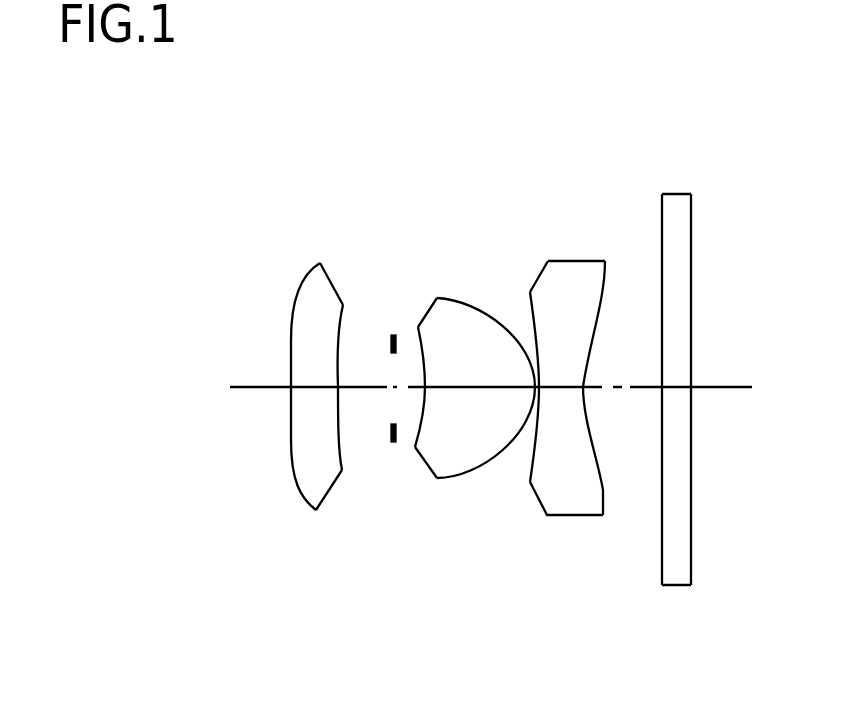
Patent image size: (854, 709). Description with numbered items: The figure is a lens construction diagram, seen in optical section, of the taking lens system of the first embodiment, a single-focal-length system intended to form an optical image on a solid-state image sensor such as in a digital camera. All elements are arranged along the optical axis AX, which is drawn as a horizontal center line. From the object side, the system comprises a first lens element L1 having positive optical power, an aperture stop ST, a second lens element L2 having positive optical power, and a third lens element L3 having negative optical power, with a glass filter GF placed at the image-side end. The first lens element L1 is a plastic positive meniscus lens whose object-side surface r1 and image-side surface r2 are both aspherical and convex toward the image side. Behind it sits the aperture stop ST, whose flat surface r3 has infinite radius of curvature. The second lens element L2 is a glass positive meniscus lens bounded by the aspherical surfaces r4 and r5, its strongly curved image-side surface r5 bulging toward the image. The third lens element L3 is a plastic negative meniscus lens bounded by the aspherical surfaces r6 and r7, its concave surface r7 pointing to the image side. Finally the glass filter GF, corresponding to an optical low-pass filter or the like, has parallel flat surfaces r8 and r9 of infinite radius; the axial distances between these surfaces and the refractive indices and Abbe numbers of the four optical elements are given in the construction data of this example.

The optical axis AX is at (713, 389).
The first lens element L1 is at (305, 415).
The second lens element L2 is at (469, 387).
The third lens element L3 is at (558, 388).
The aperture stop ST is at (384, 335).
The third surface (aperture stop surface) r3 is at (392, 334).
The glass filter GF is at (662, 371).
The first surface r1 is at (291, 336).
The second surface r2 is at (339, 350).
The fourth surface r4 is at (428, 352).
The fifth surface r5 is at (497, 320).
The sixth surface r6 is at (550, 317).
The seventh surface r7 is at (605, 302).
The eighth surface r8 is at (662, 240).
The ninth surface r9 is at (691, 232).